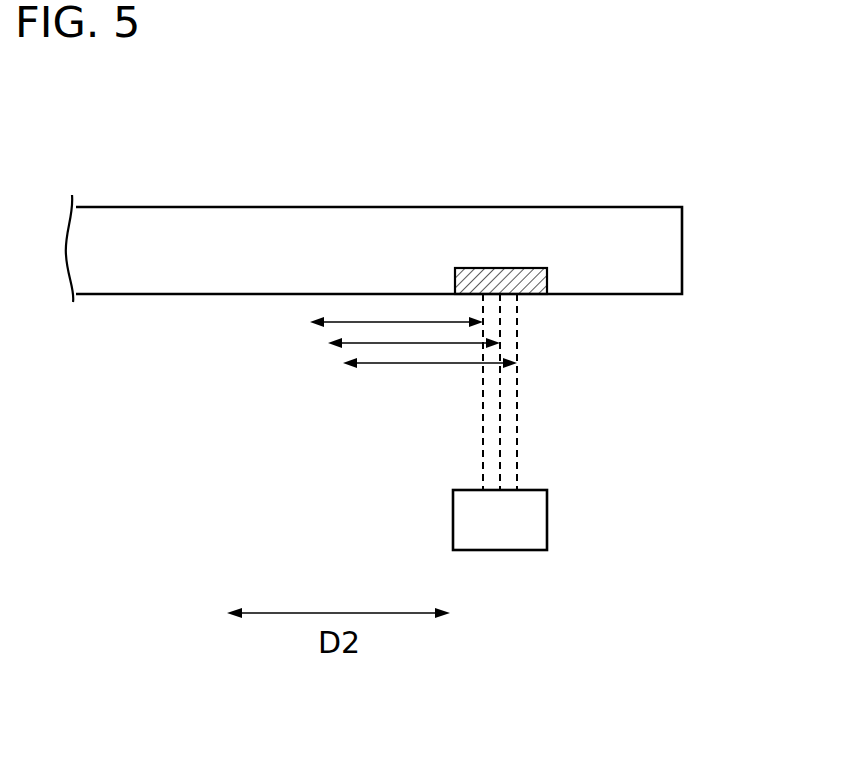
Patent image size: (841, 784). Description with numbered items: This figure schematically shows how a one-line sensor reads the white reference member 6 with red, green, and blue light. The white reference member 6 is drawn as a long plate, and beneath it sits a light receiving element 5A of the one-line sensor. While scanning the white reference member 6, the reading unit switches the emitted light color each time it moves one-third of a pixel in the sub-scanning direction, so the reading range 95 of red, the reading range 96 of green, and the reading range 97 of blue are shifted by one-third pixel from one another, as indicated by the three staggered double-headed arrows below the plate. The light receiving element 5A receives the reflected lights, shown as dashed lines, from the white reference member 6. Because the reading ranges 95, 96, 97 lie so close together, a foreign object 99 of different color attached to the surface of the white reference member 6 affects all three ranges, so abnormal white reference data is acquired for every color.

The white reference member 6 is at (663, 255).
The foreign object 99 is at (500, 268).
The light receiving element 5A is at (527, 518).
The reading range of red 95 is at (342, 323).
The reading range of green 96 is at (390, 343).
The reading range of blue 97 is at (437, 363).